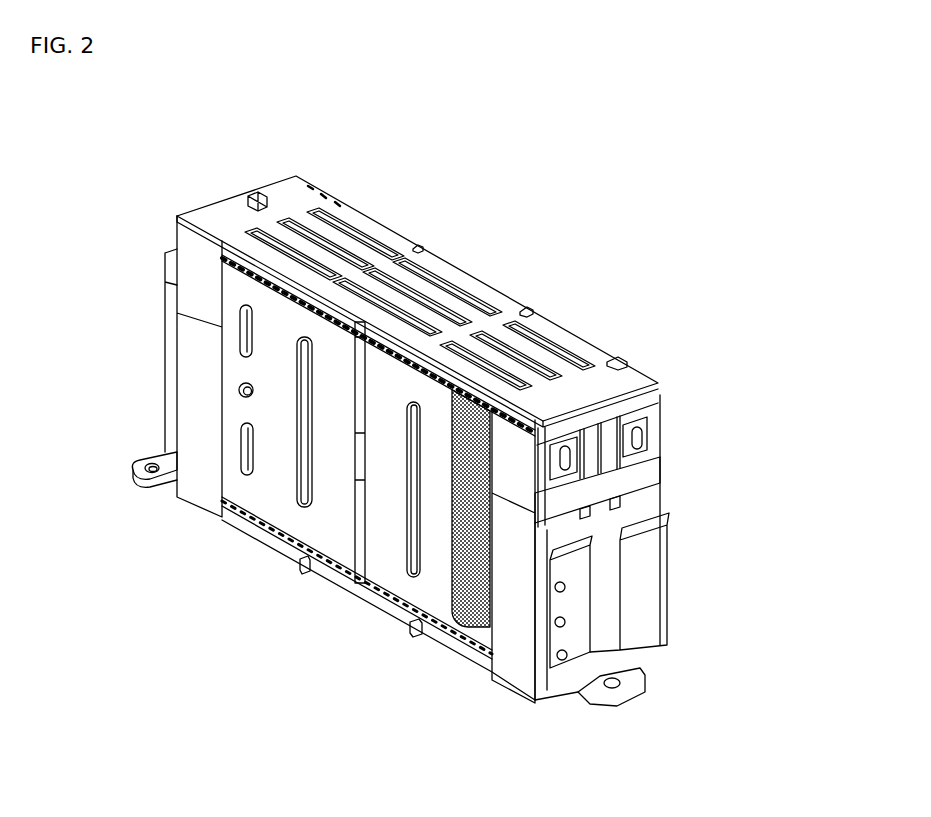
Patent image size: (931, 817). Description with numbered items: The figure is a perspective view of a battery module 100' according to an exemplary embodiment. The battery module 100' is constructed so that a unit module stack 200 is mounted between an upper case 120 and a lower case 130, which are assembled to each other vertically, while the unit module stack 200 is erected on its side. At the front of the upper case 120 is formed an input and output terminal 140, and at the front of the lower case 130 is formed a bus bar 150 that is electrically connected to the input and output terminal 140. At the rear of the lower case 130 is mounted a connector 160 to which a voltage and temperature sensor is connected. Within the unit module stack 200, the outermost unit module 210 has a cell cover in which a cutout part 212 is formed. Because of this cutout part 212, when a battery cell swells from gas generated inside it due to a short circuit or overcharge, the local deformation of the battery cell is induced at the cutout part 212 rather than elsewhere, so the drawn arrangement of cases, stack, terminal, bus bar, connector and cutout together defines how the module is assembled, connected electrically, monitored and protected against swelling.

The battery module 100' is at (409, 412).
The upper case 120 is at (445, 273).
The lower case 130 is at (513, 673).
The input and output terminal 140 is at (653, 424).
The bus bar 150 is at (655, 452).
The connector 160 is at (171, 330).
The unit module stack 200 is at (250, 411).
The outermost unit module 210 is at (284, 501).
The cutout part 212 is at (473, 573).